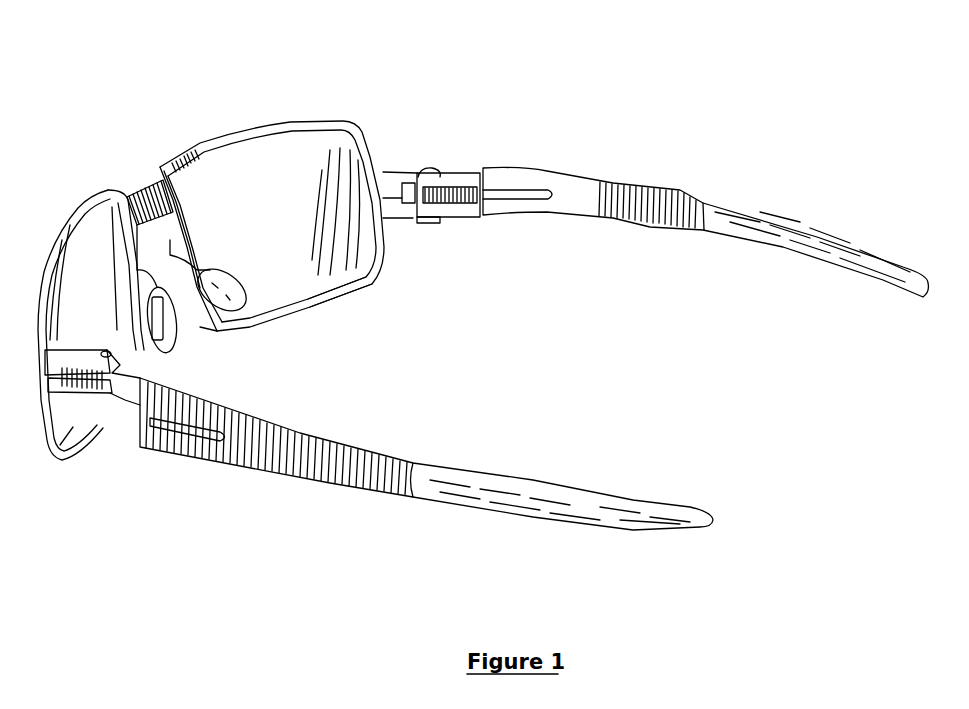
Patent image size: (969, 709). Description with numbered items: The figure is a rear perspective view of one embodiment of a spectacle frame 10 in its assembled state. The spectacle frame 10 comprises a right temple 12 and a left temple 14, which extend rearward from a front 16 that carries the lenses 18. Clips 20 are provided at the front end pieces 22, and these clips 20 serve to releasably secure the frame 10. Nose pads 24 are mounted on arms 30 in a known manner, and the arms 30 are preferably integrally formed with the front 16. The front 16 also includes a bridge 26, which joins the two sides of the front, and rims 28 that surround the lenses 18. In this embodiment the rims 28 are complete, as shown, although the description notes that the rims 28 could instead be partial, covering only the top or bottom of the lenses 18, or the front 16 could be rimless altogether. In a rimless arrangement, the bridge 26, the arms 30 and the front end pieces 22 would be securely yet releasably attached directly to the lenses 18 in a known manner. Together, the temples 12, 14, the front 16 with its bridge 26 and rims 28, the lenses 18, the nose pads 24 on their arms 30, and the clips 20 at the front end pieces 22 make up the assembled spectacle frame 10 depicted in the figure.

The spectacle frame 10 is at (763, 122).
The right temple 12 is at (577, 167).
The left temple 14 is at (530, 472).
The front 16 is at (193, 145).
The lenses 18 is at (73, 247).
The clips 20 is at (103, 397).
The front end pieces 22 is at (395, 168).
The nose pads 24 is at (167, 323).
The bridge 26 is at (147, 190).
The rims 28 is at (347, 122).
The arms 30 is at (193, 257).